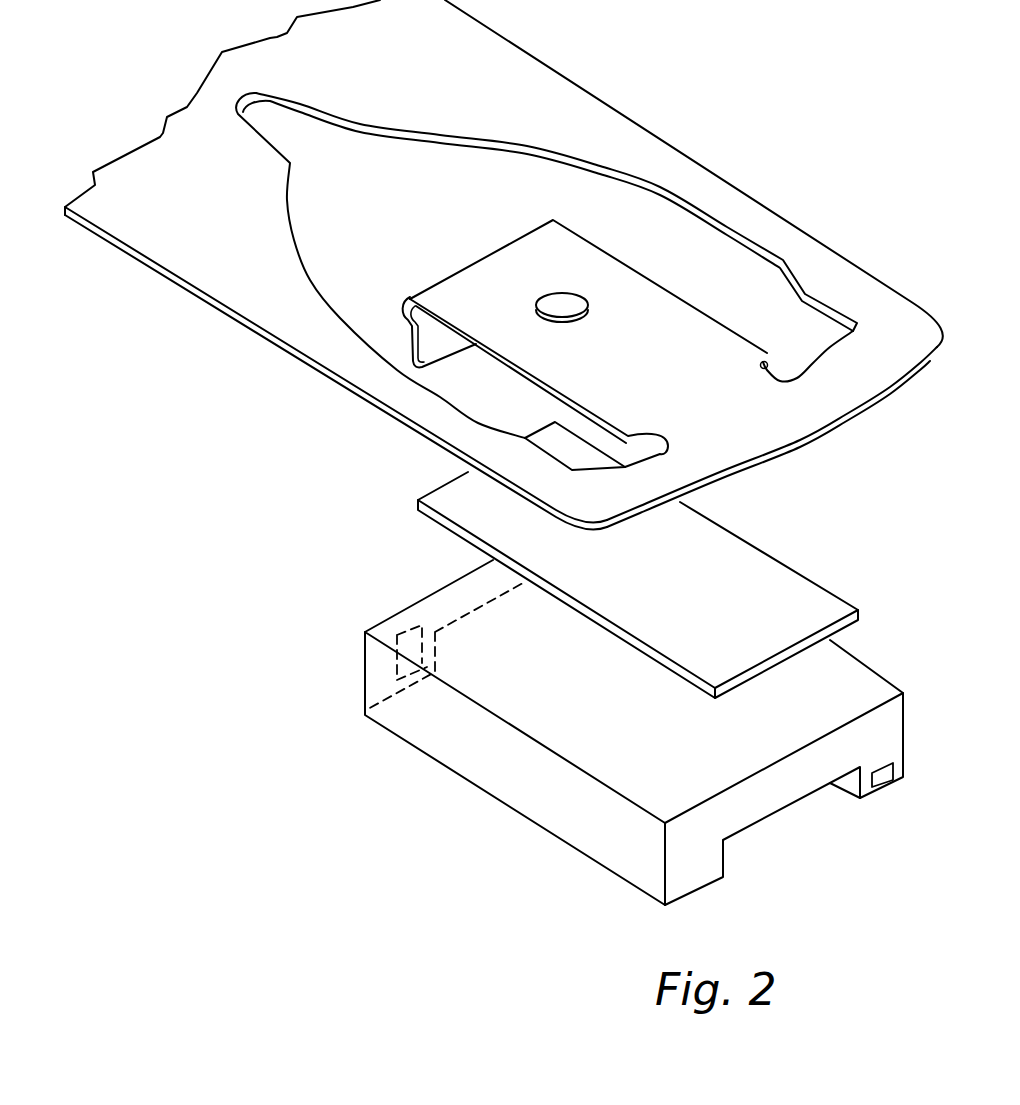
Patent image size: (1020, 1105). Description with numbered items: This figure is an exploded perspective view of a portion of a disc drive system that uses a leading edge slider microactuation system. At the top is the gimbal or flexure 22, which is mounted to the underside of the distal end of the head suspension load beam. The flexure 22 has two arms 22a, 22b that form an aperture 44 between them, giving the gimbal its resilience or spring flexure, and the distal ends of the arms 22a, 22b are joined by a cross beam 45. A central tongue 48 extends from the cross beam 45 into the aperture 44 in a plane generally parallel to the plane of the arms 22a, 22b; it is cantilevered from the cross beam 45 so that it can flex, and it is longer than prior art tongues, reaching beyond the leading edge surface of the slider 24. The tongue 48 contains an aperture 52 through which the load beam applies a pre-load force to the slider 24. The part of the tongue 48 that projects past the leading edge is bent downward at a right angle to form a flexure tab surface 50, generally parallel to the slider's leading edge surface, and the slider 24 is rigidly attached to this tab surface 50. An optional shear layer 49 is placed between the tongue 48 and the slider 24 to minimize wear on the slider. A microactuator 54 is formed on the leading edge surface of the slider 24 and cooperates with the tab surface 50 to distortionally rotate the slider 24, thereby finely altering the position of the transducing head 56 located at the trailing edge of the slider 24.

The flexure 22 is at (504, 264).
The flexure arm 22a is at (765, 222).
The flexure arm 22b is at (433, 418).
The aperture 44 is at (527, 173).
The cross beam 45 is at (798, 431).
The central tongue 48 is at (585, 345).
The flexure tab surface 50 is at (438, 338).
The aperture 52 is at (573, 293).
The shear layer 49 is at (748, 580).
The slider 24 is at (619, 730).
The microactuator 54 is at (408, 633).
The transducing head 56 is at (884, 787).